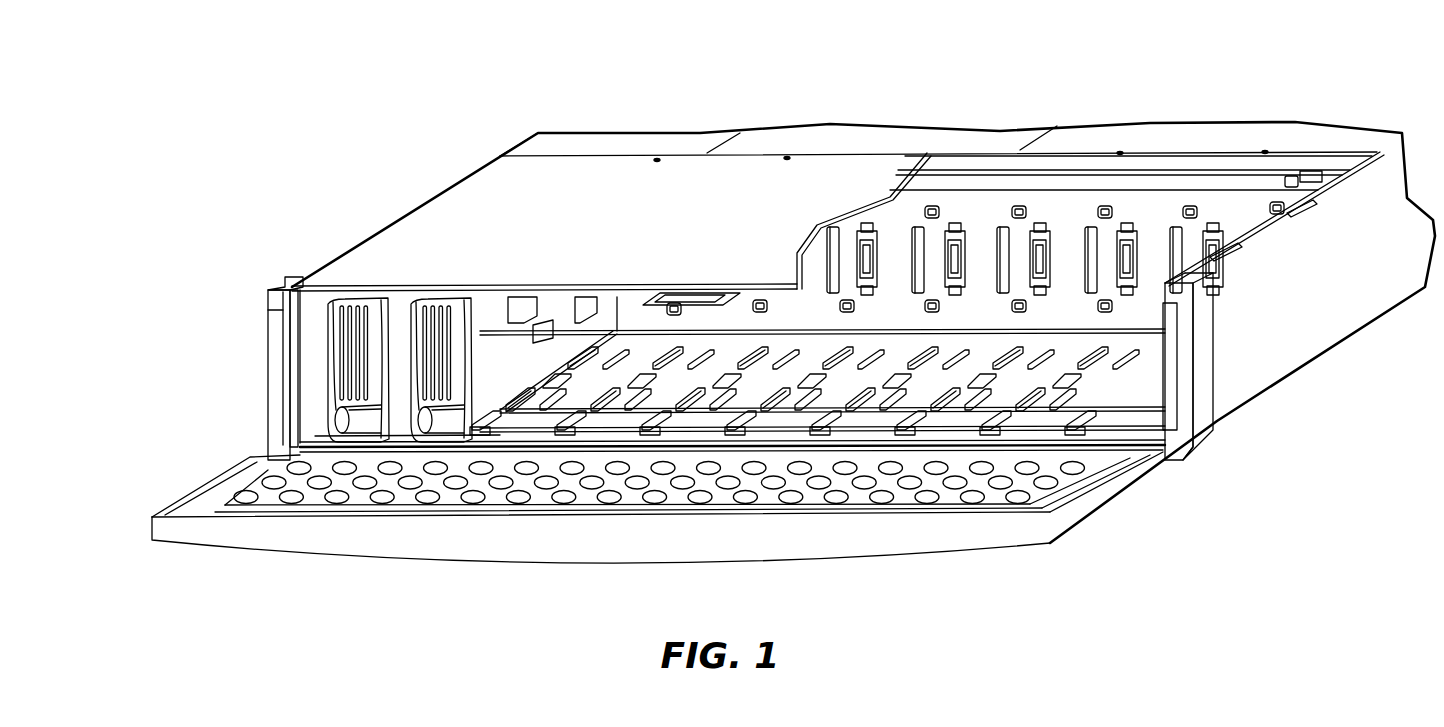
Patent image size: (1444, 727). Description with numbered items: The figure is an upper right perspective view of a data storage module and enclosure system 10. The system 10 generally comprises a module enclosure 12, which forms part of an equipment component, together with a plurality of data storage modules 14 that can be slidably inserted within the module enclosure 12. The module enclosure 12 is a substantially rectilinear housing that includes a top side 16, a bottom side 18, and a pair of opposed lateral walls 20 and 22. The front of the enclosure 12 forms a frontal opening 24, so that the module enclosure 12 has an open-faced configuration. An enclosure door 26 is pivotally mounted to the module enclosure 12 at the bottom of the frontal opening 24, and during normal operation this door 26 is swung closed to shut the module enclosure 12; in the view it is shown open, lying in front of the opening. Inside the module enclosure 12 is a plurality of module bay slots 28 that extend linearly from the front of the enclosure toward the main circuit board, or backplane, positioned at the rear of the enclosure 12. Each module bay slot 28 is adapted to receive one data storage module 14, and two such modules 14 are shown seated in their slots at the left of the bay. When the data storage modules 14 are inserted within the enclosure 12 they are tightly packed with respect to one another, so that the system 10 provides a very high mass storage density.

The data storage module and enclosure system 10 is at (352, 76).
The module enclosure 12 is at (852, 170).
The data storage modules 14 is at (390, 312).
The top side 16 is at (628, 192).
The bottom side 18 is at (1153, 452).
The lateral wall 20 is at (300, 350).
The lateral wall 22 is at (1297, 323).
The frontal opening 24 is at (294, 342).
The enclosure door 26 is at (1063, 520).
The module bay slots 28 is at (530, 438).